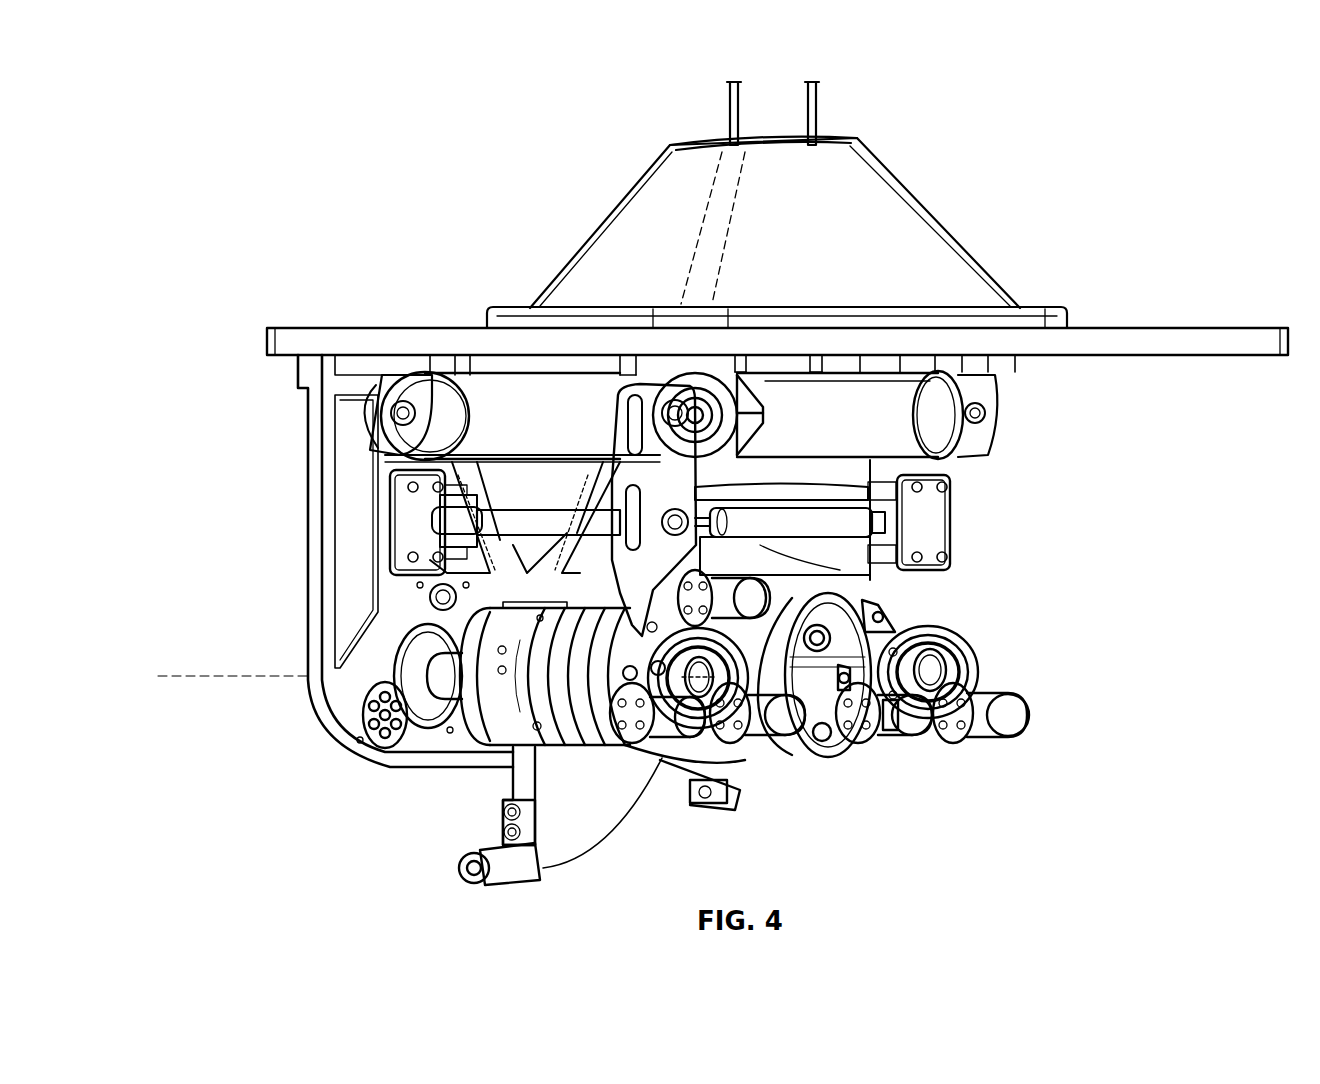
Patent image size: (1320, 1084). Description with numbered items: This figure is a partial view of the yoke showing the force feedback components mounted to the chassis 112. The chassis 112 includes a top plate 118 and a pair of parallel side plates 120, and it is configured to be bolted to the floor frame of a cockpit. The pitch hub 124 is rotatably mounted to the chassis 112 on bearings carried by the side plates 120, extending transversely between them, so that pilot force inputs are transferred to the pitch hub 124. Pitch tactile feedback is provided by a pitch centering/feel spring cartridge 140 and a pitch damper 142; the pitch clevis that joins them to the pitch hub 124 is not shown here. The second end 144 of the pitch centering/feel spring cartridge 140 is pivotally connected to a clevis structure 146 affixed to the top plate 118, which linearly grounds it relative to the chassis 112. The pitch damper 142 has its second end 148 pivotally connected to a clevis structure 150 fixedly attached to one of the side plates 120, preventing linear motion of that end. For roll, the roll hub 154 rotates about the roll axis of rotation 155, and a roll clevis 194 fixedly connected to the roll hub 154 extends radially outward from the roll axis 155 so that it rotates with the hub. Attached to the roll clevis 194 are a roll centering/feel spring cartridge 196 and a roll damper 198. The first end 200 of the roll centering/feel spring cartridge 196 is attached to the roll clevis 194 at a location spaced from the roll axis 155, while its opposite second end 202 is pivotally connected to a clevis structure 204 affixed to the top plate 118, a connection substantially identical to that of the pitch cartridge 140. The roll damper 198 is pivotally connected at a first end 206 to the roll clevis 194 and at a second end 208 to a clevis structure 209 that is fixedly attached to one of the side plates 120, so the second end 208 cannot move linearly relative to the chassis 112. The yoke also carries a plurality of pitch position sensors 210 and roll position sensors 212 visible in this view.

The chassis 112 is at (290, 298).
The top plate 118 is at (1190, 328).
The side plates 120 is at (318, 647).
The pitch hub 124 is at (935, 623).
The pitch centering/feel spring cartridge 140 is at (387, 467).
The pitch damper 142 is at (400, 560).
The second end 144 is at (367, 427).
The clevis structure 146 is at (393, 388).
The second end 148 is at (440, 522).
The clevis structure 150 is at (398, 493).
The roll hub 154 is at (455, 783).
The roll axis of rotation 155 is at (187, 676).
The roll clevis 194 is at (632, 522).
The roll centering/feel spring cartridge 196 is at (912, 438).
The roll damper 198 is at (880, 527).
The first end 200 is at (640, 445).
The second end 202 is at (952, 422).
The clevis structure 204 is at (980, 388).
The first end 206 is at (515, 523).
The second end 208 is at (887, 517).
The clevis structure 209 is at (925, 545).
The pitch position sensors 210 is at (925, 748).
The roll position sensors 212 is at (670, 750).